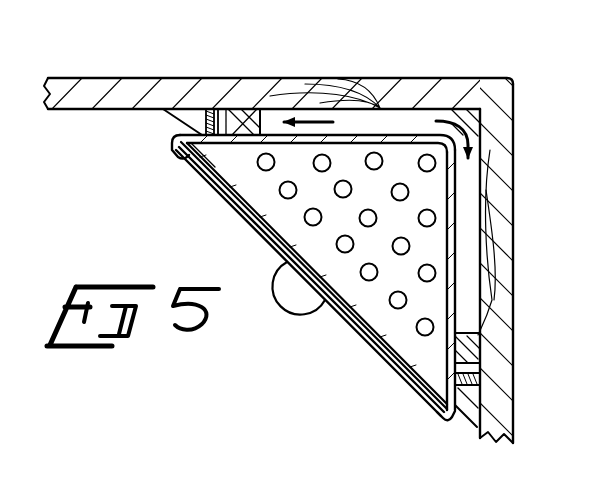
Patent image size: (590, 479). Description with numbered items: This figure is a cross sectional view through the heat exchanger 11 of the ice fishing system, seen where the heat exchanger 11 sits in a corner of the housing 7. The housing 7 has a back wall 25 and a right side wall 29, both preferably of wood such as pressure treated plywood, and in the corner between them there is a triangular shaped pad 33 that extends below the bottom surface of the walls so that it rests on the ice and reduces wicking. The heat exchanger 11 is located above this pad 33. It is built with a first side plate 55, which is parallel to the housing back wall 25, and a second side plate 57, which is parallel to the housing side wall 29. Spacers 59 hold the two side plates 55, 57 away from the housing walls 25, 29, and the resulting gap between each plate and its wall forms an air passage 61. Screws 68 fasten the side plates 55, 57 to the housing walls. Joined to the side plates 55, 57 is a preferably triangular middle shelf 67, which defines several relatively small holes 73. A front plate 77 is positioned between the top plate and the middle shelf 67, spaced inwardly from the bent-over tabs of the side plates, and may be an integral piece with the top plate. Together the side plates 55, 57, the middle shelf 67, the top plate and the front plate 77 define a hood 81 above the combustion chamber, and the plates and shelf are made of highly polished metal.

The housing 7 is at (520, 121).
The heat exchanger 11 is at (343, 320).
The back wall 25 is at (385, 88).
The right side wall 29 is at (506, 256).
The triangular shaped pad 33 is at (465, 409).
The first side plate 55 is at (402, 136).
The second side plate 57 is at (458, 177).
The spacer 59 is at (245, 109).
The air passage 61 is at (466, 322).
The middle shelf 67 is at (212, 170).
The screw 68 is at (481, 396).
The hole 73 is at (267, 164).
The front plate 77 is at (393, 354).
The hood 81 is at (272, 229).